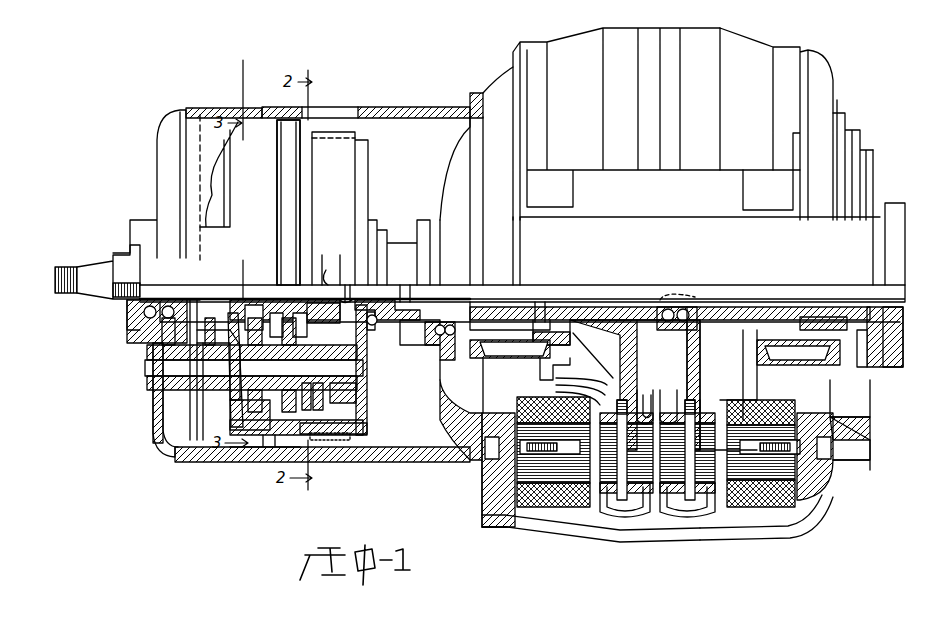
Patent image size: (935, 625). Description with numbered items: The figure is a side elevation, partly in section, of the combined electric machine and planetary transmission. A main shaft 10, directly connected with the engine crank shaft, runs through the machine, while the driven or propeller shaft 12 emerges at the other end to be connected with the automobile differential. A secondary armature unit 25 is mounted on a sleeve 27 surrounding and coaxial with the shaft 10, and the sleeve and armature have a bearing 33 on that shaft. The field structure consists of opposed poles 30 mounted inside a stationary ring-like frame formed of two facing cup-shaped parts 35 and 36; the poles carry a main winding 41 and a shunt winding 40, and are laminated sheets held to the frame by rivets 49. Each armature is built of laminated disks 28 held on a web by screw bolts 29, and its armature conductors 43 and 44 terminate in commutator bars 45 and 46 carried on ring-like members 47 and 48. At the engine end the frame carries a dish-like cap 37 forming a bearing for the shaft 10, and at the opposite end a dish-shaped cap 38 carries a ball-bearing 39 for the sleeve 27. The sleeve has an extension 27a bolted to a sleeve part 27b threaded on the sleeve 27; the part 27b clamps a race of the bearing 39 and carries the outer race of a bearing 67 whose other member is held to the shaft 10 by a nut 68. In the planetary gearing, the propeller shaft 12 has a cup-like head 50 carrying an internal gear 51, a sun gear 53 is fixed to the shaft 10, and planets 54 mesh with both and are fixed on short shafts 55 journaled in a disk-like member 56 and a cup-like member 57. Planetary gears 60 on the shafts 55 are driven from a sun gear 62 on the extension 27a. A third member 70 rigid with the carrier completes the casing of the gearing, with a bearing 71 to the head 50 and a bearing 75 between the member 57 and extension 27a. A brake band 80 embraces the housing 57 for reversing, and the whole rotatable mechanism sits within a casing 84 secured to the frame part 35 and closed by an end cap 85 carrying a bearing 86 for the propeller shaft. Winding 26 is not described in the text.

The main shaft 10 is at (634, 283).
The driven shaft 12 is at (92, 296).
The armature unit 25 is at (597, 520).
The winding 26 is at (680, 510).
The sleeve 27 is at (555, 300).
The sleeve extension 27a is at (326, 270).
The sleeve 27b is at (398, 335).
The laminated disks 28 is at (645, 487).
The screw bolts 29 is at (705, 487).
The poles 30 is at (495, 490).
The bearing 33 is at (680, 305).
The frame part 35 is at (512, 535).
The frame part 36 is at (833, 493).
The dish-like cap 37 is at (858, 163).
The dish-shaped cap 38 is at (812, 324).
The ball-bearing 39 is at (426, 346).
The shunt winding 40 is at (805, 500).
The main winding 41 is at (755, 507).
The armature conductors 43 is at (745, 383).
The armature conductors 44 is at (590, 370).
The commutator bars 45 is at (798, 352).
The commutator bars 46 is at (520, 376).
The ring-like member 47 is at (765, 305).
The ring-like member 48 is at (533, 338).
The rivets 49 is at (869, 468).
The cup-like head 50 is at (196, 297).
The internal gear 51 is at (262, 450).
The sun gear 53 is at (245, 298).
The planets 54 is at (245, 395).
The short shafts 55 is at (364, 372).
The disk-like member 56 is at (288, 142).
The cup-like member 57 is at (368, 166).
The planetary gears 60 is at (296, 409).
The sun gear 62 is at (318, 254).
The bearing 67 is at (398, 285).
The nut 68 is at (392, 284).
The third member 70 is at (222, 410).
The bearing 71 is at (230, 345).
The bearing 75 is at (345, 285).
The brake band 80 is at (342, 441).
The casing 84 is at (416, 108).
The end cap 85 is at (153, 367).
The bearing 86 is at (128, 326).